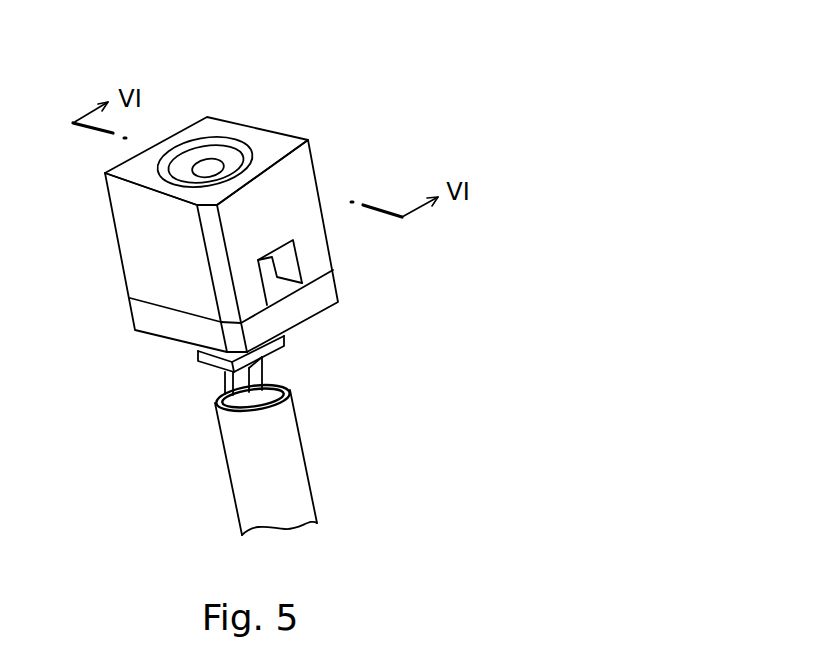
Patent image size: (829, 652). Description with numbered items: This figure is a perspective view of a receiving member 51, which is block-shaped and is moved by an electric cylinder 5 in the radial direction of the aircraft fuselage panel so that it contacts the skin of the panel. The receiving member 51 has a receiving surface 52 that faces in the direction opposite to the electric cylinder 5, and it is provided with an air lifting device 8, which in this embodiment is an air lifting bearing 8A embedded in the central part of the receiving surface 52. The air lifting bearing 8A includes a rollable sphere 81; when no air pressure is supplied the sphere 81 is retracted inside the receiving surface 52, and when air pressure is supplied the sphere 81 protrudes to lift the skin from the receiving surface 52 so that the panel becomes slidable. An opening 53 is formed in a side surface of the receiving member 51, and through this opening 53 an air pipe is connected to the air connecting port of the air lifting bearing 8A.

The electric cylinder 5 is at (275, 447).
The air lifting device 8 is at (192, 113).
The air lifting bearing 8A is at (187, 157).
The sphere 81 is at (207, 163).
The receiving member 51 is at (295, 193).
The receiving surface 52 is at (272, 142).
The opening 53 is at (272, 284).